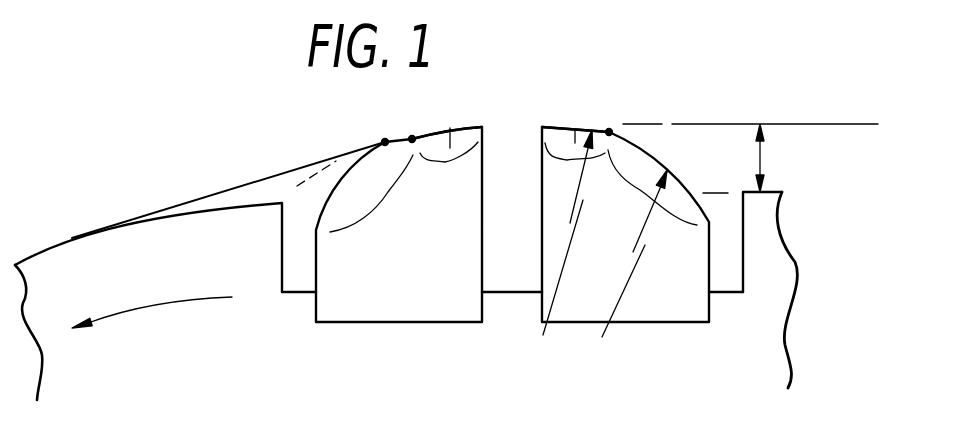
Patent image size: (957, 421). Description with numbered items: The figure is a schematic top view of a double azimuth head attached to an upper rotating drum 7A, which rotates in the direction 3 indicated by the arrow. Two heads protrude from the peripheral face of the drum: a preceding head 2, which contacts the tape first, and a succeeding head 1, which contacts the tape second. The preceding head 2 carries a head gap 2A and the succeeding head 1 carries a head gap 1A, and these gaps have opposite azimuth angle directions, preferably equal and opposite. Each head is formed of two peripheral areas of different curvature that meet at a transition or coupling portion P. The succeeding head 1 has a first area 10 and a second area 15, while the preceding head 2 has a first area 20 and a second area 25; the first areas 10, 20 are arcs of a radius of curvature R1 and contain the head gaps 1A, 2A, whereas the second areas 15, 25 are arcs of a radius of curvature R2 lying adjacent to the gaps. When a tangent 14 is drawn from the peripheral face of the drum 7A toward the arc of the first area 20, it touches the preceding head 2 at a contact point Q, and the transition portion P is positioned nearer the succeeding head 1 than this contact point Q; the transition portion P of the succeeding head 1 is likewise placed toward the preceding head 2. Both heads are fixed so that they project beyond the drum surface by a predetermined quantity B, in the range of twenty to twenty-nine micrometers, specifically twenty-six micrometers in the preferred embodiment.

The succeeding head 1 is at (670, 313).
The head gap 1A is at (573, 124).
The preceding head 2 is at (360, 320).
The head gap 2A is at (450, 124).
The rotation direction 3 is at (150, 305).
The upper rotating drum 7A is at (219, 217).
The first area 10 is at (574, 167).
The tangent 14 is at (286, 170).
The second area 15 is at (651, 187).
The first area 20 is at (449, 168).
The second area 25 is at (374, 193).
The transition portion P is at (412, 136).
The contact point Q is at (383, 140).
The radius of curvature R1 is at (553, 253).
The radius of curvature R2 is at (624, 273).
The protrusion quantity B is at (773, 158).